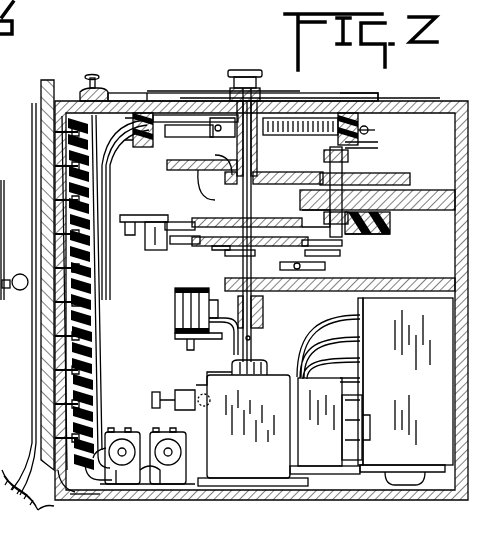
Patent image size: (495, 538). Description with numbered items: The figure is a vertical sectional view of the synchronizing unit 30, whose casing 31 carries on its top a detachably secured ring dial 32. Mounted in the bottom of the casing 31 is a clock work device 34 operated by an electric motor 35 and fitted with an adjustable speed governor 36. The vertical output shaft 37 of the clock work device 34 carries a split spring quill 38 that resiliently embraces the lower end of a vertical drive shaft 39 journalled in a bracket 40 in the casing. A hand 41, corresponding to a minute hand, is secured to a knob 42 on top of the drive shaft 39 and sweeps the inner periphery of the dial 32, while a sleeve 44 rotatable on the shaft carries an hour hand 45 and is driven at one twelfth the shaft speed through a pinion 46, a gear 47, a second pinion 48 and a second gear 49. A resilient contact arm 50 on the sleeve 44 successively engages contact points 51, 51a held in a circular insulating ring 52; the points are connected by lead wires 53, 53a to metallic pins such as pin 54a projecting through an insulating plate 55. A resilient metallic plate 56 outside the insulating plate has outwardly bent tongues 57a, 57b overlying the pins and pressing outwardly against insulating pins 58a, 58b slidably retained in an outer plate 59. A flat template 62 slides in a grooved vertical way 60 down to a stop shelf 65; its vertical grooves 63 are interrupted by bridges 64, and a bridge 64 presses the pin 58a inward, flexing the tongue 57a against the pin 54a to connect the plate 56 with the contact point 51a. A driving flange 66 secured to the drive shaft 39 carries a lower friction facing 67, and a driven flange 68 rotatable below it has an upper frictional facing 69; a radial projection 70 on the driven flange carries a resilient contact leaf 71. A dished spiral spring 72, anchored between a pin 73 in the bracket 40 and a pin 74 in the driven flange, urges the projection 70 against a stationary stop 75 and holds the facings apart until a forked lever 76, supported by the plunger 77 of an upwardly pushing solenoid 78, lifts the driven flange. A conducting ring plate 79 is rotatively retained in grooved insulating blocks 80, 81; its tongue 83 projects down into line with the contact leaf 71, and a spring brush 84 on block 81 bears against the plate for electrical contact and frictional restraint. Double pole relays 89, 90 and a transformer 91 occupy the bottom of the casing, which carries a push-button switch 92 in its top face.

The synchronizing unit 30 is at (441, 94).
The casing 31 is at (402, 98).
The ring dial 32 is at (347, 93).
The clock work device 34 is at (250, 478).
The electric motor 35 is at (328, 478).
The adjustable speed governor 36 is at (180, 390).
The vertical output shaft 37 is at (253, 350).
The split spring quill 38 is at (263, 310).
The vertical drive shaft 39 is at (262, 186).
The bracket 40 is at (340, 291).
The hand 41 is at (308, 93).
The knob 42 is at (234, 70).
The sleeve 44 is at (258, 152).
The hand 45 is at (198, 93).
The pinion 46 is at (228, 170).
The gear 47 is at (394, 173).
The second pinion 48 is at (342, 160).
The second gear 49 is at (190, 161).
The resilient contact arm 50 is at (172, 138).
The contact points 51 is at (358, 147).
The contact point 51a is at (140, 140).
The circular insulating ring 52 is at (140, 148).
The lead wires 53 is at (372, 128).
The lead wire 53a is at (70, 200).
The metallic pin 54a is at (95, 282).
The insulating plate 55 is at (92, 424).
The resilient metallic plate 56 is at (88, 476).
The resilient tongue 57a is at (100, 286).
The resilient tongue 57b is at (56, 521).
The insulating pin 58a is at (56, 290).
The insulating pin 58b is at (58, 238).
The outer plate 59 is at (72, 498).
The grooved vertical way 60 is at (34, 104).
The flat template 62 is at (45, 80).
The vertical grooves 63 is at (52, 196).
The bridge 64 is at (50, 274).
The stop shelf 65 is at (58, 452).
The driving flange 66 is at (278, 218).
The lower facing 67 is at (212, 220).
The driven flange 68 is at (200, 250).
The upper frictional facing 69 is at (200, 238).
The radial projection 70 is at (326, 268).
The resilient contact leaf 71 is at (342, 246).
The spiral spring 72 is at (214, 252).
The pin 73 is at (300, 268).
The pin 74 is at (230, 256).
The stationary stop 75 is at (340, 252).
The forked lever 76 is at (218, 320).
The plunger 77 is at (175, 295).
The solenoid 78 is at (182, 319).
The conducting ring plate 79 is at (390, 236).
The grooved insulating block 80 is at (392, 222).
The grooved insulating block 81 is at (128, 236).
The tongue 83 is at (152, 250).
The spring brush 84 is at (165, 187).
The double pole relay 89 is at (135, 480).
The double pole relay 90 is at (180, 480).
The transformer 91 is at (415, 462).
The push-button switch 92 is at (100, 85).